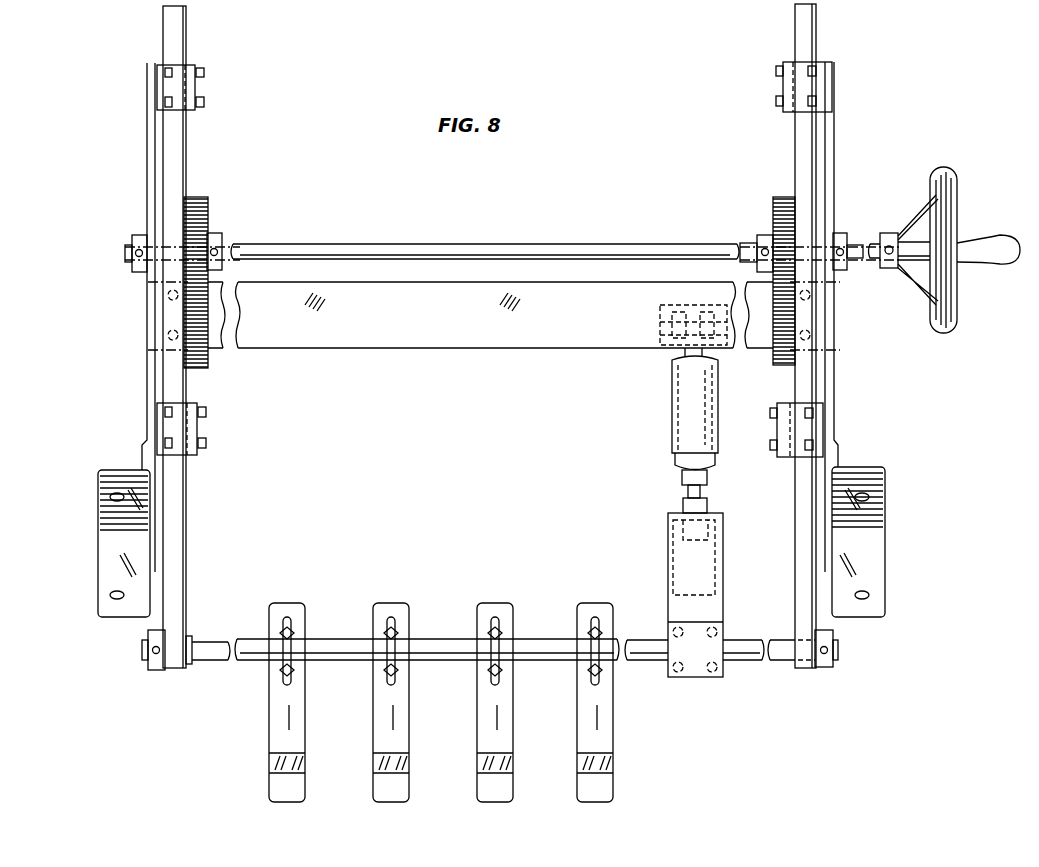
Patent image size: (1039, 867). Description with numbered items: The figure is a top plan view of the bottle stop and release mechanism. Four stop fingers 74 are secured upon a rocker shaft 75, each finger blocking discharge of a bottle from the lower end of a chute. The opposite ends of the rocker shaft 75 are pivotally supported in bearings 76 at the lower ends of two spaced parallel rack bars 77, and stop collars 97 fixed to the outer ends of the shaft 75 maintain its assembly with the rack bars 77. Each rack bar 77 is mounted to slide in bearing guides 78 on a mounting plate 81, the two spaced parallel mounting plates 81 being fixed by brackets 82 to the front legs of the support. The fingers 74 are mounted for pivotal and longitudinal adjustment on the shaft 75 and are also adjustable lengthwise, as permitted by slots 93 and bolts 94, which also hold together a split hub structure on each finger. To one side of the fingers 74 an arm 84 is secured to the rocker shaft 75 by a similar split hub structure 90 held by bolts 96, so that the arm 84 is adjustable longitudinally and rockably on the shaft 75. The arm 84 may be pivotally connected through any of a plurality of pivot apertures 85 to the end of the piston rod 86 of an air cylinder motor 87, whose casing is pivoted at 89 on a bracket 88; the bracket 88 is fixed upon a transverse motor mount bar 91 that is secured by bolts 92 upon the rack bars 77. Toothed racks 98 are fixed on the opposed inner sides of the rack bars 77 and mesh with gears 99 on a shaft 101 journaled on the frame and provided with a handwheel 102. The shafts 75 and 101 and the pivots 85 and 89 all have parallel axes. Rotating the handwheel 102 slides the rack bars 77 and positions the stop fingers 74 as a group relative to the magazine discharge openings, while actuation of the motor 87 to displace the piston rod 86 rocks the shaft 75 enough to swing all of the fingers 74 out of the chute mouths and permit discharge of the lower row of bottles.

The stop finger 74 is at (290, 720).
The rocker shaft 75 is at (453, 658).
The bearing 76 is at (192, 640).
The rack bar 77 is at (180, 598).
The bearing guide 78 is at (196, 88).
The mounting plate 81 is at (153, 404).
The bracket 82 is at (108, 540).
The arm 84 is at (718, 608).
The pivot aperture 85 is at (712, 582).
The piston rod 86 is at (701, 492).
The air cylinder motor 87 is at (680, 440).
The bracket 88 is at (690, 346).
The pivot 89 is at (660, 330).
The split hub structure 90 is at (702, 678).
The transverse motor mount bar 91 is at (566, 340).
The bolt 92 is at (168, 337).
The slot 93 is at (291, 650).
The bolt 94 is at (293, 632).
The bolt 96 is at (678, 673).
The stop collar 97 is at (156, 668).
The toothed rack 98 is at (208, 310).
The gear 99 is at (202, 246).
The shaft 101 is at (285, 248).
The handwheel 102 is at (952, 226).